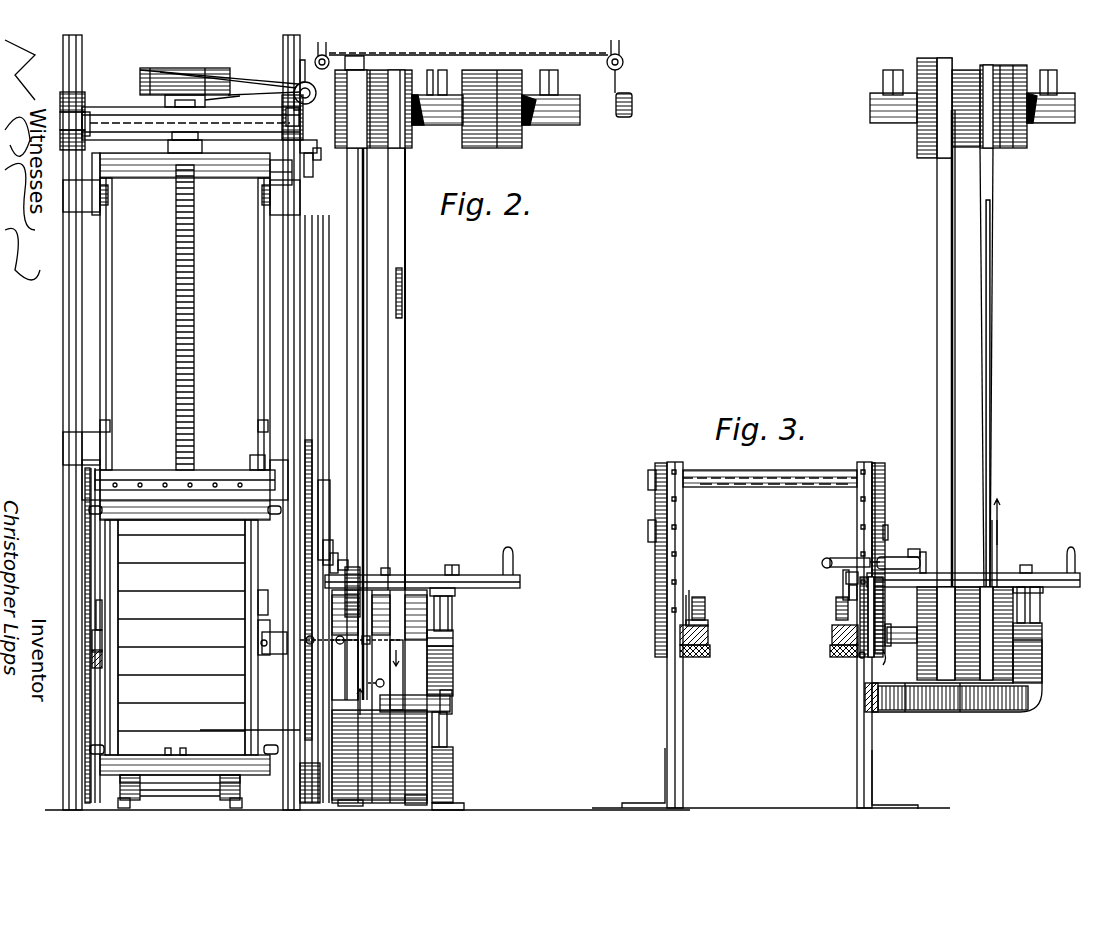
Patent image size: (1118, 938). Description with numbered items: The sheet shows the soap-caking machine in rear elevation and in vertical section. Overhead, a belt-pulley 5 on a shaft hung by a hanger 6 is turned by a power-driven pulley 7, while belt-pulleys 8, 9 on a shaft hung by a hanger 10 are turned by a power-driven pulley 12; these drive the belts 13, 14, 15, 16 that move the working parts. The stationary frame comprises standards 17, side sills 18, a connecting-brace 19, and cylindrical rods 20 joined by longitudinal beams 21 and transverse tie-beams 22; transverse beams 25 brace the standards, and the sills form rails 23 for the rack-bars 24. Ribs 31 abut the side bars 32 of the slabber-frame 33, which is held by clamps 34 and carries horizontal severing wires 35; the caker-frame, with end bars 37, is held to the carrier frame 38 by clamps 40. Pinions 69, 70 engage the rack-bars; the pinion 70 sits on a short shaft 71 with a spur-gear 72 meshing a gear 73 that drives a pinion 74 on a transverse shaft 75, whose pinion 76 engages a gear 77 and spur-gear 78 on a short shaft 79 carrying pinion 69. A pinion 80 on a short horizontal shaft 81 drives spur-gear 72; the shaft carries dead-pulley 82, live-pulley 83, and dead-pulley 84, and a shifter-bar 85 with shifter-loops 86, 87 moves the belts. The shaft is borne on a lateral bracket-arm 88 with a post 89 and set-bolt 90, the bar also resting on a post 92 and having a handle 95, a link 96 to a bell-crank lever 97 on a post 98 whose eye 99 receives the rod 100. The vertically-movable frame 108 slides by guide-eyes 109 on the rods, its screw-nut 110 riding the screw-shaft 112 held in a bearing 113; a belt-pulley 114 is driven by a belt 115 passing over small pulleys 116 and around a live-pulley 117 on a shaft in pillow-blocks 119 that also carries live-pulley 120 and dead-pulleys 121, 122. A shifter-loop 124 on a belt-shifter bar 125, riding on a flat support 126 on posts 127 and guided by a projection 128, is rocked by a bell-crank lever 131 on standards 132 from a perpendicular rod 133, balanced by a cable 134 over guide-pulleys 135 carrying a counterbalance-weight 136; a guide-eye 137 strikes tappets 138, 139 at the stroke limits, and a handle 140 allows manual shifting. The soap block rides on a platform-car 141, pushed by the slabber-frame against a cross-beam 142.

In FIG. 2, the belt-pulley 5 is at (378, 148).
In FIG. 2, the hanger 6 is at (440, 126).
In FIG. 2, the power-driven pulley 7 is at (516, 140).
In FIG. 3, the belt-pulley 8 is at (917, 140).
In FIG. 3, the belt-pulley 9 is at (972, 148).
In FIG. 3, the hanger 10 is at (873, 125).
In FIG. 3, the power-driven pulley 12 is at (1027, 148).
In FIG. 2, the crossed belt 13 is at (366, 325).
In FIG. 2, the straight belt 14 is at (406, 341).
In FIG. 2, the straight belt 15 is at (350, 382).
In FIG. 3, the straight belt 15 is at (936, 337).
In FIG. 3, the crossed belt 16 is at (997, 369).
In FIG. 2, the standards 17 is at (90, 566).
In FIG. 3, the standards 17 is at (684, 555).
In FIG. 2, the side sills 18 is at (102, 638).
In FIG. 3, the side sills 18 is at (655, 582).
In FIG. 3, the connecting-brace 19 is at (866, 700).
In FIG. 2, the perpendicular cylindrical rods 20 is at (67, 388).
In FIG. 2, the longitudinal beams 21 is at (76, 106).
In FIG. 2, the transverse tie-beams 22 is at (118, 106).
In FIG. 2, the rails or tracks 23 is at (95, 660).
In FIG. 3, the rails or tracks 23 is at (698, 657).
In FIG. 3, the rack-bars 24 is at (710, 630).
In FIG. 3, the transverse beams 25 is at (738, 470).
In FIG. 2, the longitudinal-projecting ribs 31 is at (118, 601).
In FIG. 2, the perpendicular side bars 32 is at (118, 565).
In FIG. 2, the slabber-frame 33 is at (185, 508).
In FIG. 2, the clamps 34 is at (90, 750).
In FIG. 2, the horizontal cutting or severing wires 35 is at (181, 637).
In FIG. 2, the end bars 37 is at (140, 464).
In FIG. 2, the carrier frame 38 is at (238, 463).
In FIG. 2, the clamps 40 is at (262, 460).
In FIG. 3, the pinion 69 is at (705, 608).
In FIG. 3, the pinion 70 is at (836, 606).
In FIG. 3, the short shaft 71 is at (849, 597).
In FIG. 2, the spur-gear 72 is at (258, 600).
In FIG. 3, the spur-gear 72 is at (884, 603).
In FIG. 2, the gear 73 is at (312, 527).
In FIG. 3, the gear 73 is at (888, 532).
In FIG. 2, the pinion 74 is at (315, 482).
In FIG. 3, the pinion 74 is at (886, 496).
In FIG. 3, the transverse shaft 75 is at (786, 487).
In FIG. 2, the pinion 76 is at (66, 458).
In FIG. 3, the pinion 76 is at (648, 471).
In FIG. 2, the gear 77 is at (83, 527).
In FIG. 3, the gear 77 is at (648, 518).
In FIG. 2, the spur-gear 78 is at (83, 600).
In FIG. 3, the short shaft 79 is at (698, 600).
In FIG. 2, the pinion 80 is at (262, 640).
In FIG. 3, the pinion 80 is at (879, 662).
In FIG. 3, the short horizontal shaft 81 is at (949, 633).
In FIG. 3, the dead-pulley 82 is at (925, 712).
In FIG. 3, the live-pulley 83 is at (965, 712).
In FIG. 3, the dead-pulley 84 is at (1000, 712).
In FIG. 2, the shifter-bar 85 is at (475, 570).
In FIG. 3, the shifter-bar 85 is at (1015, 573).
In FIG. 2, the shifter-loop 86 is at (357, 567).
In FIG. 3, the shifter-loop 86 is at (952, 573).
In FIG. 2, the shifter-loop 87 is at (392, 570).
In FIG. 3, the shifter-loop 87 is at (998, 572).
In FIG. 2, the lateral bracket-arm 88 is at (453, 685).
In FIG. 3, the lateral bracket-arm 88 is at (1042, 668).
In FIG. 2, the post or stud 89 is at (452, 612).
In FIG. 3, the post or stud 89 is at (1040, 602).
In FIG. 2, the set-bolt 90 is at (452, 565).
In FIG. 3, the set-bolt 90 is at (1030, 565).
In FIG. 3, the post 92 is at (846, 577).
In FIG. 2, the handle 95 is at (513, 555).
In FIG. 3, the handle 95 is at (1076, 558).
In FIG. 2, the link 96 is at (345, 558).
In FIG. 3, the link 96 is at (927, 558).
In FIG. 2, the bell-crank lever 97 is at (339, 552).
In FIG. 3, the bell-crank lever 97 is at (904, 551).
In FIG. 3, the post or support 98 is at (843, 610).
In FIG. 3, the eye 99 is at (825, 560).
In FIG. 3, the rod 100 is at (840, 558).
In FIG. 2, the vertically-movable frame 108 is at (258, 275).
In FIG. 2, the guide-eyes 109 is at (108, 198).
In FIG. 2, the non-rotary screw-nut 110 is at (248, 179).
In FIG. 2, the screw-shaft 112 is at (196, 342).
In FIG. 2, the bearing 113 is at (208, 103).
In FIG. 2, the belt-pulley 114 is at (185, 75).
In FIG. 2, the belt 115 is at (262, 68).
In FIG. 2, the small pulleys 116 is at (303, 80).
In FIG. 2, the live-pulley 117 is at (345, 696).
In FIG. 2, the supports or pillow-blocks 119 is at (310, 822).
In FIG. 2, the live-pulley 120 is at (378, 803).
In FIG. 2, the dead-pulley 121 is at (345, 806).
In FIG. 2, the dead-pulley 122 is at (418, 805).
In FIG. 2, the shifter-loop 124 is at (384, 692).
In FIG. 2, the belt-shifter bar 125 is at (452, 712).
In FIG. 2, the flat bar or support 126 is at (452, 706).
In FIG. 2, the posts or studs 127 is at (469, 736).
In FIG. 2, the projection 128 is at (384, 680).
In FIG. 2, the bell-crank lever 131 is at (315, 640).
In FIG. 2, the standards or supports 132 is at (365, 638).
In FIG. 2, the perpendicular rod 133 is at (318, 438).
In FIG. 2, the cable 134 is at (410, 52).
In FIG. 2, the guide-pulleys 135 is at (328, 57).
In FIG. 2, the counterbalance-weight 136 is at (633, 101).
In FIG. 2, the guide-eye 137 is at (314, 165).
In FIG. 2, the tappet 138 is at (320, 155).
In FIG. 2, the tappet 139 is at (330, 510).
In FIG. 2, the handle 140 is at (454, 656).
In FIG. 2, the platform-car 141 is at (185, 782).
In FIG. 2, the cross-beam 142 is at (214, 756).